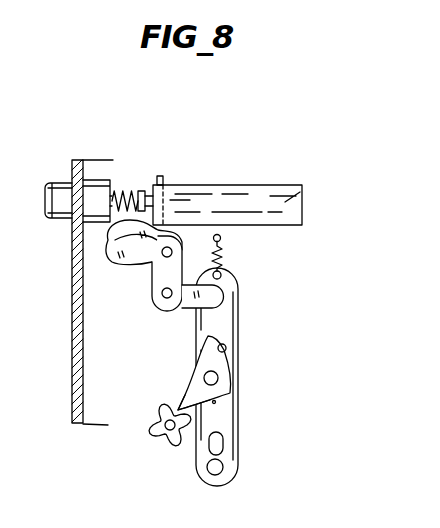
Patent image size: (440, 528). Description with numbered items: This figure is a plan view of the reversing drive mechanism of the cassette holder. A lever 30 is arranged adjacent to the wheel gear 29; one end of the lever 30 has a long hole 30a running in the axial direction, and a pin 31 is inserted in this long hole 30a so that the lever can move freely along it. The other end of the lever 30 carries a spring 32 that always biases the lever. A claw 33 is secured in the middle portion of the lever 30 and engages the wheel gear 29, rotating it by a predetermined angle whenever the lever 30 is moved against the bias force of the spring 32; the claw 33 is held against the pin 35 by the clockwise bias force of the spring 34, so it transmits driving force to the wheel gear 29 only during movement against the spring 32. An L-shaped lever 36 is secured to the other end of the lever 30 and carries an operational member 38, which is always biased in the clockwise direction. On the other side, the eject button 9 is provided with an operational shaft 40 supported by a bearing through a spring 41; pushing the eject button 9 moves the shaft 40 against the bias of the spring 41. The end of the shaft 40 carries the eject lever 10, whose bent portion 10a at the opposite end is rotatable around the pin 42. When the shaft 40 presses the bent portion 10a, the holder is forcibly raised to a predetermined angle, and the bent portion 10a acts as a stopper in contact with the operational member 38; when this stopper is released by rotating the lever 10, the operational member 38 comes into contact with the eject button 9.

The eject button 9 is at (52, 182).
The spring 41 is at (125, 189).
The operational shaft 40 is at (149, 190).
The pin 42 is at (160, 203).
The eject lever 10 is at (278, 197).
The bent portion 10a is at (190, 198).
The operational member 38 is at (125, 252).
The L-shaped lever 36 is at (180, 306).
The spring 32 is at (224, 255).
The lever 30 is at (228, 320).
The pin 35 is at (226, 348).
The spring 34 is at (226, 370).
The claw 33 is at (192, 395).
The wheel gear 29 is at (152, 429).
The long hole 30a is at (218, 440).
The pin 31 is at (218, 467).